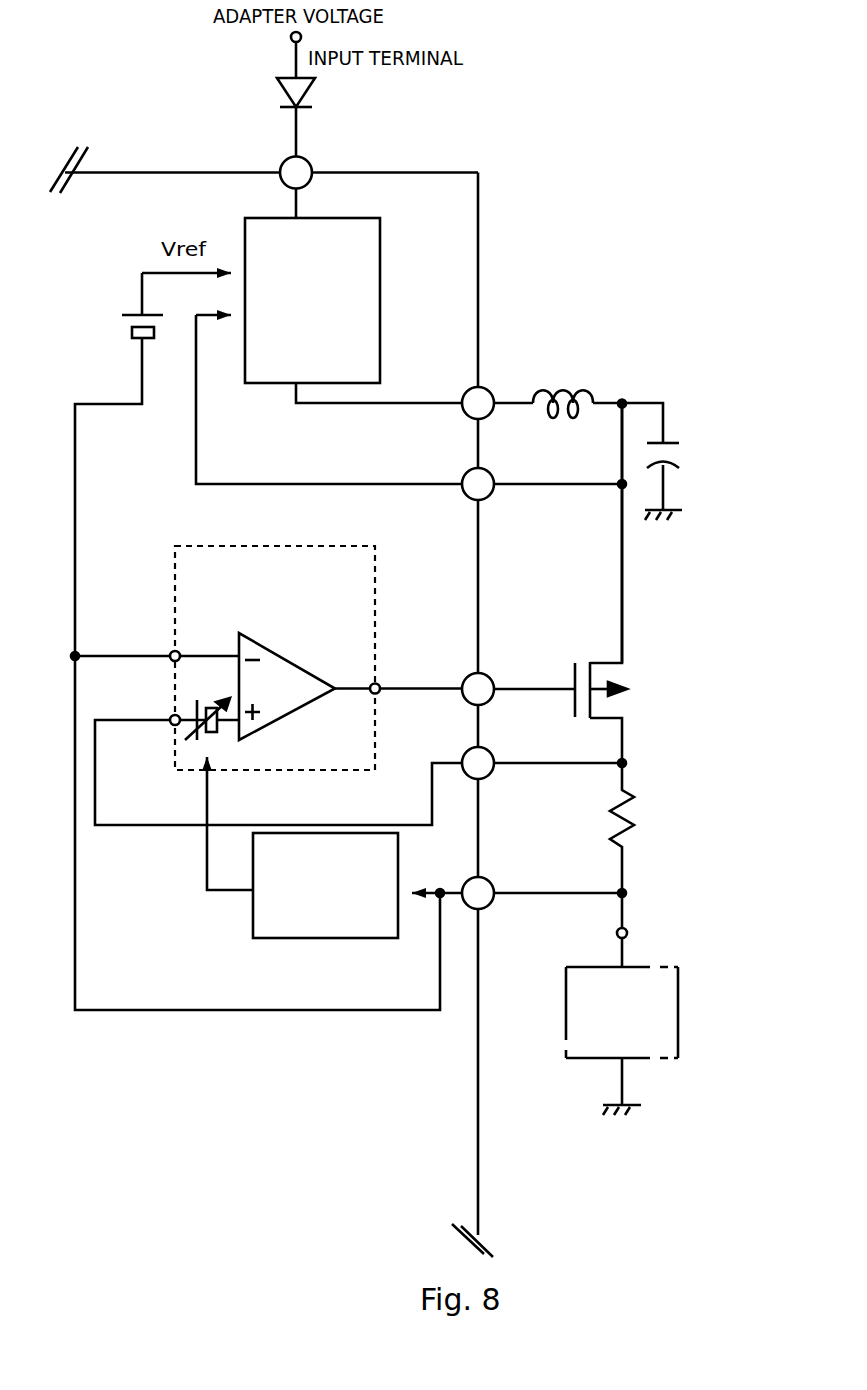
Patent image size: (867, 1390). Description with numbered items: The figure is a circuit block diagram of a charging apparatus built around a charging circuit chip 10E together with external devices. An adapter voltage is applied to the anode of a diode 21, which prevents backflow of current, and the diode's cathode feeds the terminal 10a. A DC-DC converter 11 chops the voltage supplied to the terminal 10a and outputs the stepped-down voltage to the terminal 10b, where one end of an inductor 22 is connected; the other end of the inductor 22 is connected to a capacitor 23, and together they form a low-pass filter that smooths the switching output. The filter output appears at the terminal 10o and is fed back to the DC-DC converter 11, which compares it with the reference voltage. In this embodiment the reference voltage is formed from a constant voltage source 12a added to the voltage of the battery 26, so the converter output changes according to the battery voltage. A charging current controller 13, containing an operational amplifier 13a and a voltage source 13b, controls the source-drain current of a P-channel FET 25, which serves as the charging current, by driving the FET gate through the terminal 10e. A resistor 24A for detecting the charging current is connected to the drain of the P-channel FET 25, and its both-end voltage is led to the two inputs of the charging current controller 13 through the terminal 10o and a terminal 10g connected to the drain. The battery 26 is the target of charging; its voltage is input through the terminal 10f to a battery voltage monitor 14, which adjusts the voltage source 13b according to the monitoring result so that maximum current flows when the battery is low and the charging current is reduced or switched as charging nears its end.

The diode 21 is at (307, 97).
The external connection terminal 10a is at (310, 160).
The charging circuit chip 10E is at (478, 200).
The DC-DC converter 11 is at (380, 252).
The constant voltage source 12a is at (130, 333).
The external connection terminal 10b is at (486, 388).
The inductor 22 is at (584, 387).
The capacitor 23 is at (673, 454).
The external connection terminal 10o is at (492, 476).
The charging current controller 13 is at (305, 680).
The operational amplifier 13a is at (277, 723).
The voltage source 13b is at (197, 742).
The external connection terminal 10e is at (493, 677).
The P-channel field effect transistor 25 is at (615, 706).
The external connection terminal 10g is at (493, 752).
The resistor 24A is at (640, 811).
The external connection terminal 10f is at (493, 881).
The battery voltage monitor 14 is at (363, 938).
The battery 26 is at (678, 987).